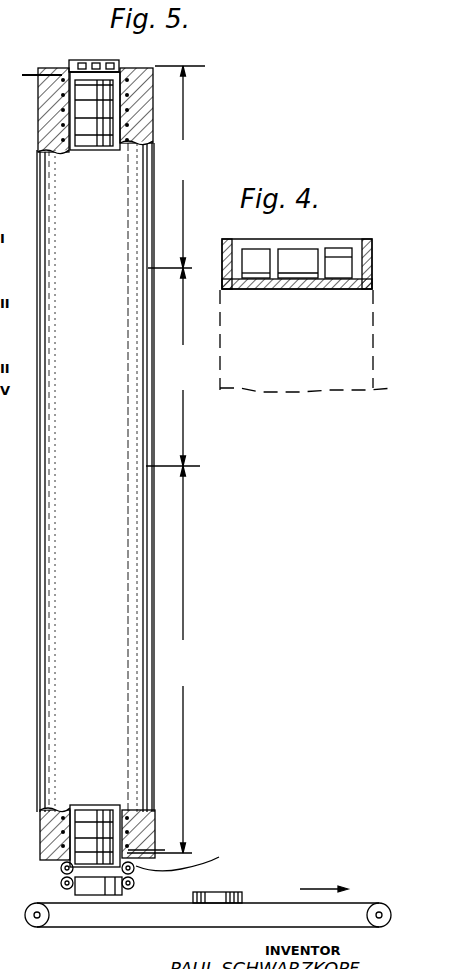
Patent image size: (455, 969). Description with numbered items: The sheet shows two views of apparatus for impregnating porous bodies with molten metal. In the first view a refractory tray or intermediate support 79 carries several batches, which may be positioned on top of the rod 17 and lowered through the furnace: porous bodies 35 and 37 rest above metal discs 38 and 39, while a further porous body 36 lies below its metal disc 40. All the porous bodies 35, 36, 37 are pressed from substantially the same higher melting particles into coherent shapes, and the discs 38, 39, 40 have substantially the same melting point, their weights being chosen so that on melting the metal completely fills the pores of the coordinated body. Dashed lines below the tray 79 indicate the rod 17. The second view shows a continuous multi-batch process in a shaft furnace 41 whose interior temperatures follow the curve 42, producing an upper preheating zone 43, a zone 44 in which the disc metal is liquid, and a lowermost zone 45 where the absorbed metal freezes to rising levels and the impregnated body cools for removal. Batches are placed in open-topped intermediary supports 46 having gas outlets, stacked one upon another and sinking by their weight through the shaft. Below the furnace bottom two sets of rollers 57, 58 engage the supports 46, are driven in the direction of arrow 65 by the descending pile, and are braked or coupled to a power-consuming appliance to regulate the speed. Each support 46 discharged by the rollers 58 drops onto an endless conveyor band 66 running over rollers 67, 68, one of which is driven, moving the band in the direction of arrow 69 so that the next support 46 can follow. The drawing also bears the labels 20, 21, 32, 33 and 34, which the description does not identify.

In FIG. 4, the rod 17 is at (348, 380).
In FIG. 5, the pin 20 is at (36, 72).
In FIG. 5, the lower mold section 21 is at (200, 738).
In FIG. 5, the inner layer 32 is at (0, 795).
In FIG. 5, the intermediate layer 33 is at (0, 765).
In FIG. 5, the outer layer 34 is at (5, 748).
In FIG. 4, the porous body 35 is at (250, 258).
In FIG. 4, the porous body 36 is at (338, 276).
In FIG. 4, the porous body 37 is at (298, 260).
In FIG. 4, the metal disc 38 is at (254, 276).
In FIG. 4, the metal disc 39 is at (298, 276).
In FIG. 4, the metal disc 40 is at (343, 250).
In FIG. 5, the furnace 41 is at (40, 684).
In FIG. 5, the temperature curve 42 is at (155, 68).
In FIG. 5, the upper preheating zone 43 is at (180, 167).
In FIG. 5, the liquid-metal zone 44 is at (170, 367).
In FIG. 5, the lowermost zone 45 is at (163, 659).
In FIG. 5, the intermediary support 46 is at (111, 62).
In FIG. 5, the set of rollers 57 is at (60, 867).
In FIG. 5, the set of rollers 58 is at (60, 884).
In FIG. 5, the arrow 65 is at (183, 858).
In FIG. 5, the endless conveyor band 66 is at (278, 902).
In FIG. 5, the roller 67 is at (34, 928).
In FIG. 5, the roller 68 is at (379, 903).
In FIG. 5, the arrow 69 is at (324, 877).
In FIG. 4, the tray 79 is at (372, 277).